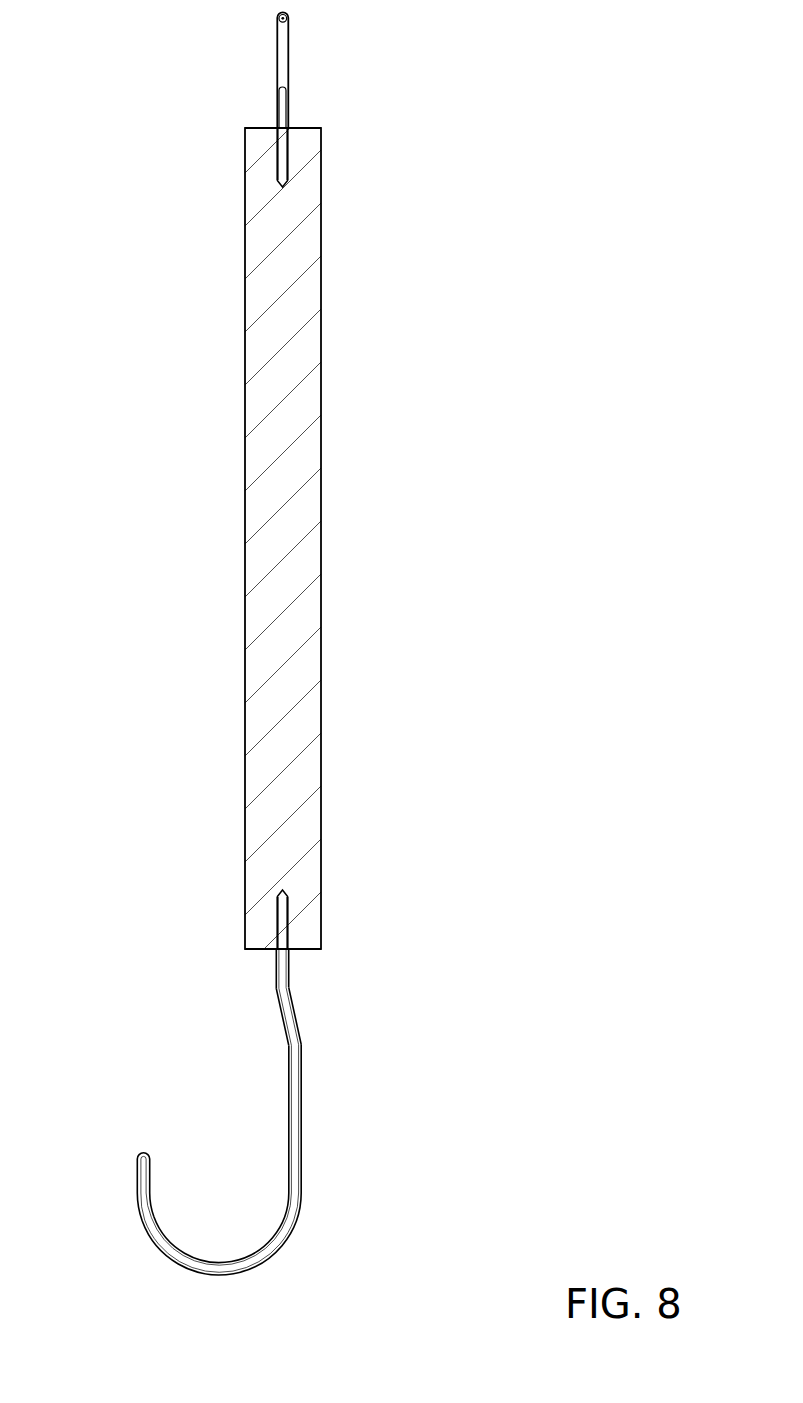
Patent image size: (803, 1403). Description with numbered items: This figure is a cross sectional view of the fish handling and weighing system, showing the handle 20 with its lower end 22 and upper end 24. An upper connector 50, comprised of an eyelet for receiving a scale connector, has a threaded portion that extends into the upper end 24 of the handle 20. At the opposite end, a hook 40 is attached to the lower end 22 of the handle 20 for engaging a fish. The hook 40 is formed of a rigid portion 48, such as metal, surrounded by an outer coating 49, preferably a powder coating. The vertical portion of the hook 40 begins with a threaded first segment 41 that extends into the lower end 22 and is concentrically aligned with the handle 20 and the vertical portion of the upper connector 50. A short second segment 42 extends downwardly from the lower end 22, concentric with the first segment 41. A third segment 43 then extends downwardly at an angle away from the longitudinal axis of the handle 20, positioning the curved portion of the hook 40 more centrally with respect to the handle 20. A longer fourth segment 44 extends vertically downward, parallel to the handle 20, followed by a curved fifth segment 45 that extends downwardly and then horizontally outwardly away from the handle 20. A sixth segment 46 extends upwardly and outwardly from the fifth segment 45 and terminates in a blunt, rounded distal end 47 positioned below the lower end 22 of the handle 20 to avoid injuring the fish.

The handle 20 is at (245, 568).
The lower end 22 is at (303, 950).
The upper end 24 is at (302, 127).
The hook 40 is at (239, 1103).
The first segment 41 is at (287, 900).
The second segment 42 is at (277, 968).
The third segment 43 is at (294, 1013).
The fourth segment 44 is at (302, 1102).
The fifth segment 45 is at (260, 1250).
The sixth segment 46 is at (147, 1172).
The distal end 47 is at (143, 1153).
The rigid portion 48 is at (140, 1170).
The outer coating 49 is at (138, 1207).
The upper connector 50 is at (277, 44).